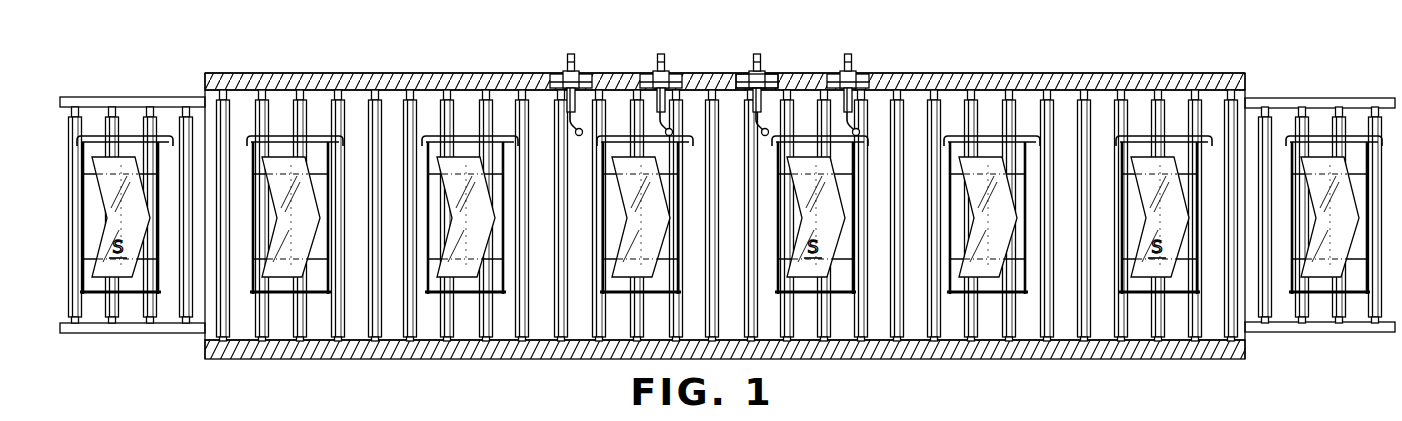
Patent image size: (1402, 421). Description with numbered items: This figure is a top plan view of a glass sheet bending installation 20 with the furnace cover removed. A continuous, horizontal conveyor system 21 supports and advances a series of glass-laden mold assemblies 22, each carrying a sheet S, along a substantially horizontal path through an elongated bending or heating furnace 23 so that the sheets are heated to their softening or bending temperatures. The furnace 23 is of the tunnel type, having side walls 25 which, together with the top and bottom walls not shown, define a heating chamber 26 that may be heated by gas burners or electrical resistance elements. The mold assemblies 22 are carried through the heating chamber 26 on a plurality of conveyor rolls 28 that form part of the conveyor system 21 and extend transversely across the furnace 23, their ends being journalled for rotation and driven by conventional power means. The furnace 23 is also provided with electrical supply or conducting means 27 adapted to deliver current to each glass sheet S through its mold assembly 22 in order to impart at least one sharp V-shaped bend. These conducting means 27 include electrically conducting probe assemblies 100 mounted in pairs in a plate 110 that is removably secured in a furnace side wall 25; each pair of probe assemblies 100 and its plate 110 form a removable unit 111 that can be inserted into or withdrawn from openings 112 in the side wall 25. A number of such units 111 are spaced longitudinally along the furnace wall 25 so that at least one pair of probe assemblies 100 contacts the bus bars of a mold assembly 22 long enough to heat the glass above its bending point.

The glass sheet bending installation 20 is at (727, 216).
The conveyor system 21 is at (709, 216).
The mold assemblies 22 is at (96, 306).
The bending or heating furnace 23 is at (1090, 64).
The side walls 25 is at (287, 80).
The heating chamber 26 is at (542, 330).
The electrical supply or conducting means 27 is at (768, 62).
The conveyor rolls 28 is at (302, 338).
The probe assemblies 100 is at (862, 115).
The plate 110 is at (652, 73).
The removable unit 111 is at (741, 62).
The openings 112 is at (552, 74).